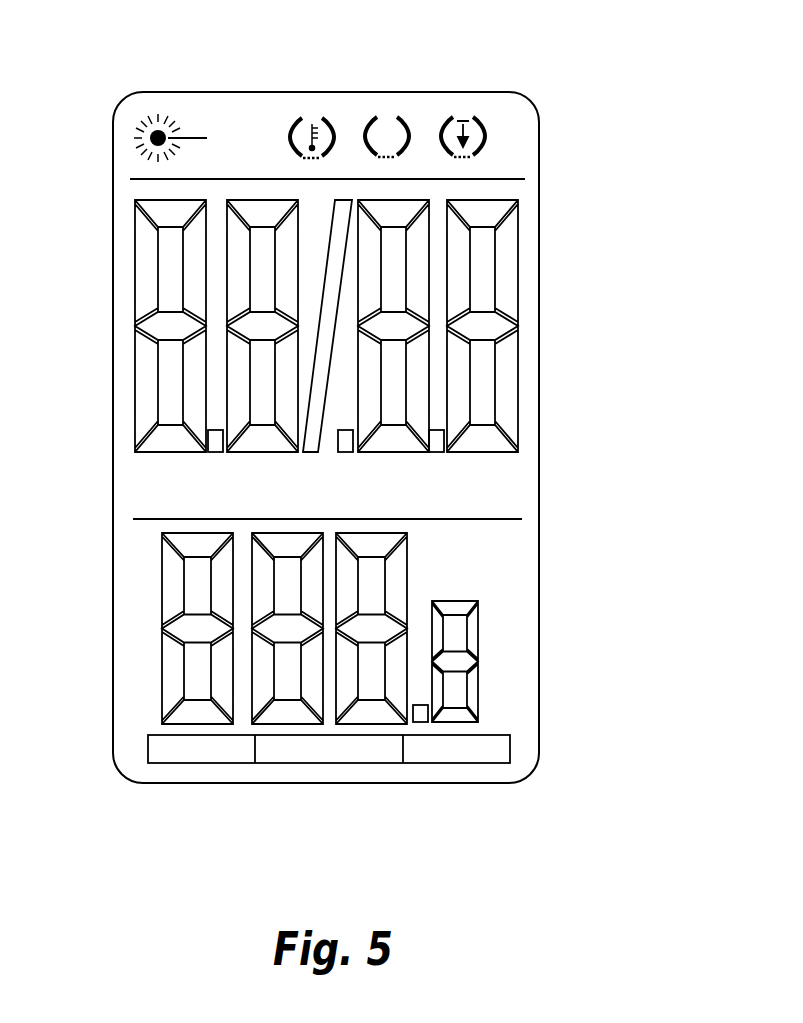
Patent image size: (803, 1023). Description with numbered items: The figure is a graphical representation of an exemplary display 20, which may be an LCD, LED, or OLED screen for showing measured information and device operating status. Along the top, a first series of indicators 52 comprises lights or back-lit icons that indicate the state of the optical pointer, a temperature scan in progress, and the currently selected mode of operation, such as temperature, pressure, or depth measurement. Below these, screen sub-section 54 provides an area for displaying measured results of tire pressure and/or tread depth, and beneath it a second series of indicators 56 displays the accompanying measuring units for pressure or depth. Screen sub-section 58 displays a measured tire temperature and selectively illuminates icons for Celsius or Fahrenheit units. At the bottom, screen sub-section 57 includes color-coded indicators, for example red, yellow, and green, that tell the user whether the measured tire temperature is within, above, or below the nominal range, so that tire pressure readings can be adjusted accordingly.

The display 20 is at (568, 102).
The first series of indicators 52 is at (508, 86).
The screen sub-section 54 is at (550, 202).
The second series of indicators 56 is at (550, 457).
The screen sub-section 57 is at (507, 792).
The screen sub-section 58 is at (103, 535).